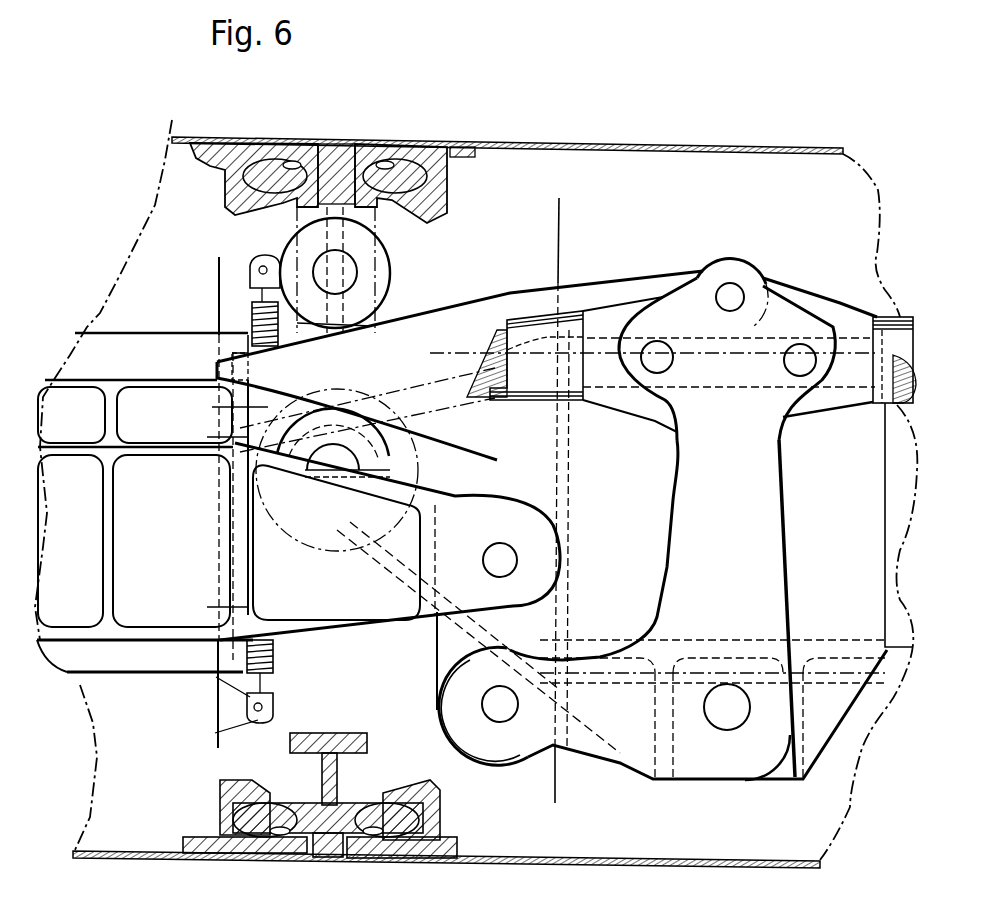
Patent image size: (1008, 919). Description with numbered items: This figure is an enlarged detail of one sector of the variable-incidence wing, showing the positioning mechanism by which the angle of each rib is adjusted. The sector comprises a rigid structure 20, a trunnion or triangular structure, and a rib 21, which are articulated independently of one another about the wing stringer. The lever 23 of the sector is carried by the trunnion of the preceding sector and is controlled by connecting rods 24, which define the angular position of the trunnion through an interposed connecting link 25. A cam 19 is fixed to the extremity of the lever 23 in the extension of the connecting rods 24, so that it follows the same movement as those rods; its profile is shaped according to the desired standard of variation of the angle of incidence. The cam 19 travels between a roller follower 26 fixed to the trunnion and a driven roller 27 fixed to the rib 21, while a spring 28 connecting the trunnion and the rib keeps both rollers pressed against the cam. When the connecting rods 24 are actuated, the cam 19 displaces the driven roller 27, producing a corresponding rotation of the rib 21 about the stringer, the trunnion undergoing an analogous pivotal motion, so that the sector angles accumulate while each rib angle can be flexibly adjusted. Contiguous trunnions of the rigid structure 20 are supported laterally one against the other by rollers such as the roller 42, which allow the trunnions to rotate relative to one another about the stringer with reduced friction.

The cam 19 is at (445, 320).
The rigid structure 20 is at (110, 647).
The rib 21 is at (320, 762).
The lever 23 is at (743, 553).
The connecting rods 24 is at (905, 320).
The connecting link 25 is at (533, 617).
The roller follower 26 is at (355, 428).
The driven roller 27 is at (283, 246).
The spring 28 is at (245, 316).
The roller 42 is at (233, 408).